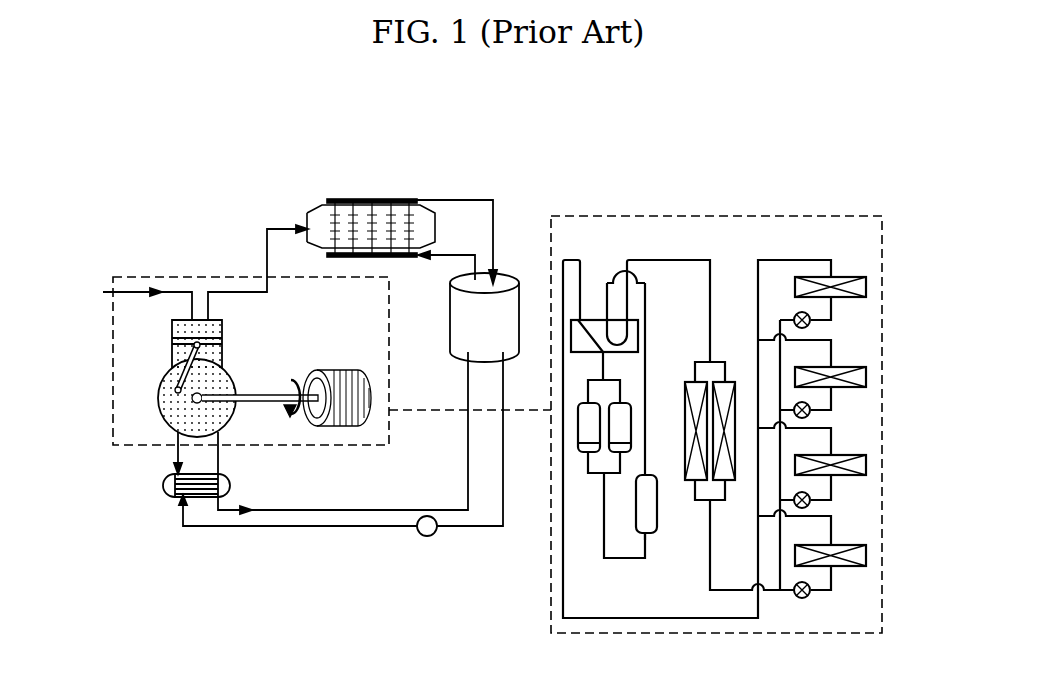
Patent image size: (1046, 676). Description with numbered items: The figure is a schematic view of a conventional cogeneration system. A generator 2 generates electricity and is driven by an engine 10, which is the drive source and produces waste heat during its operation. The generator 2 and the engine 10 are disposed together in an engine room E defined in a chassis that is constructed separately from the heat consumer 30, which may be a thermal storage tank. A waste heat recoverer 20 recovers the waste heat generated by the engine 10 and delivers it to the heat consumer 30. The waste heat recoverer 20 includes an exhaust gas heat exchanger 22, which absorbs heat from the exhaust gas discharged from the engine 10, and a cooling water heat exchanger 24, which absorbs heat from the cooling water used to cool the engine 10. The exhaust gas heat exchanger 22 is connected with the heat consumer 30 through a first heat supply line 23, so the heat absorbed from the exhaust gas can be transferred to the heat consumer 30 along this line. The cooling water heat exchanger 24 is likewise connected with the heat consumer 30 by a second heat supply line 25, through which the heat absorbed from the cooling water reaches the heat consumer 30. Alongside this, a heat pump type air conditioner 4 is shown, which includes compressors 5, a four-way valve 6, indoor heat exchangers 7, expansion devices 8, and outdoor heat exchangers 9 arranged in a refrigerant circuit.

The engine room E is at (200, 277).
The generator 2 is at (352, 422).
The heat pump type air conditioner 4 is at (697, 212).
The compressors 5 is at (584, 427).
The 4-way valve 6 is at (598, 320).
The indoor heat exchangers 7 is at (866, 286).
The expansion devices 8 is at (810, 326).
The outdoor heat exchangers 9 is at (728, 385).
The engine 10 is at (165, 398).
The waste heat recoverer 20 is at (405, 195).
The exhaust gas heat exchanger 22 is at (372, 215).
The first heat supply line 23 is at (463, 200).
The cooling water heat exchanger 24 is at (176, 482).
The cooling water pipe 25 is at (300, 527).
The heat consumer 30 is at (507, 275).